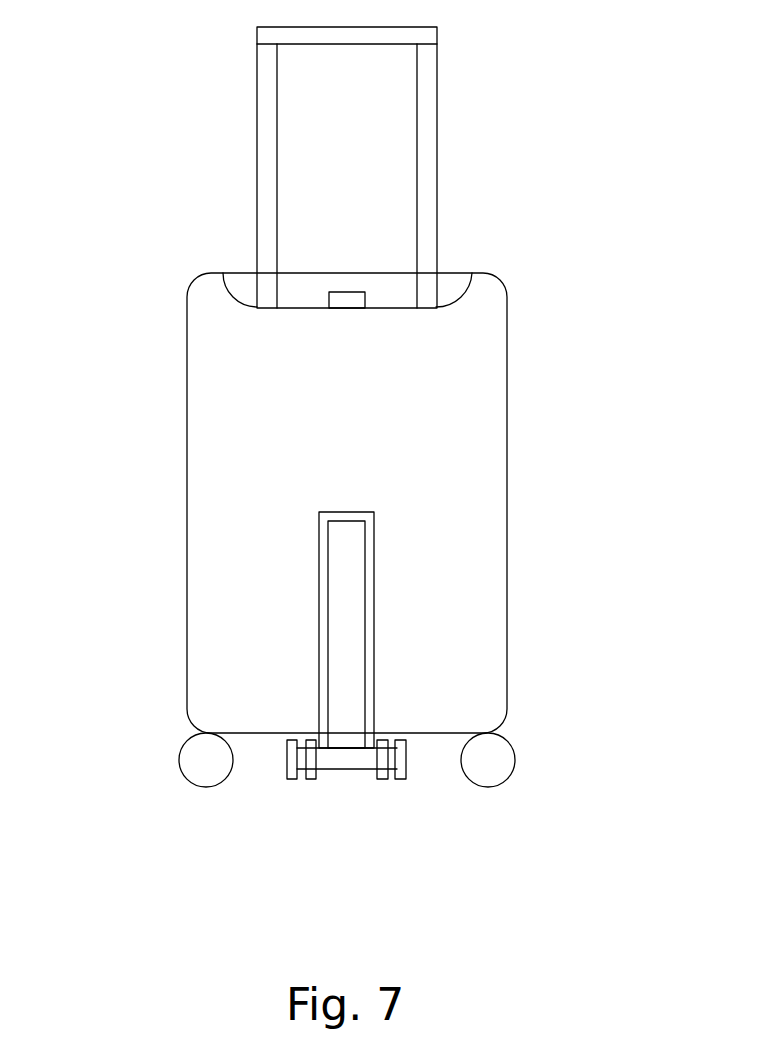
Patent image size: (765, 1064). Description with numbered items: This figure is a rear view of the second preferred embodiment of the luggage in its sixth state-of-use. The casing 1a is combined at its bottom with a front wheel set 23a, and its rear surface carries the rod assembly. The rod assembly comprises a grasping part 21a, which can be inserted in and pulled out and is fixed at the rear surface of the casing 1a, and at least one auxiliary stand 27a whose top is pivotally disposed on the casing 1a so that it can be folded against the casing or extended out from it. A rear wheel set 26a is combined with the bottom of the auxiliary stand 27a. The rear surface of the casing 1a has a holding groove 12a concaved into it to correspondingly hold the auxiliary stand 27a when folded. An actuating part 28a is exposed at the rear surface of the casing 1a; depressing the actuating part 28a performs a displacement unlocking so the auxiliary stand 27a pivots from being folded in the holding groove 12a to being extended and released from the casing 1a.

The casing 1a is at (187, 523).
The grasping part 21a is at (437, 150).
The actuating part 28a is at (346, 292).
The holding groove 12a is at (318, 617).
The auxiliary stand 27a is at (365, 583).
The rear wheel set 26a is at (310, 780).
The front wheel set 23a is at (179, 758).